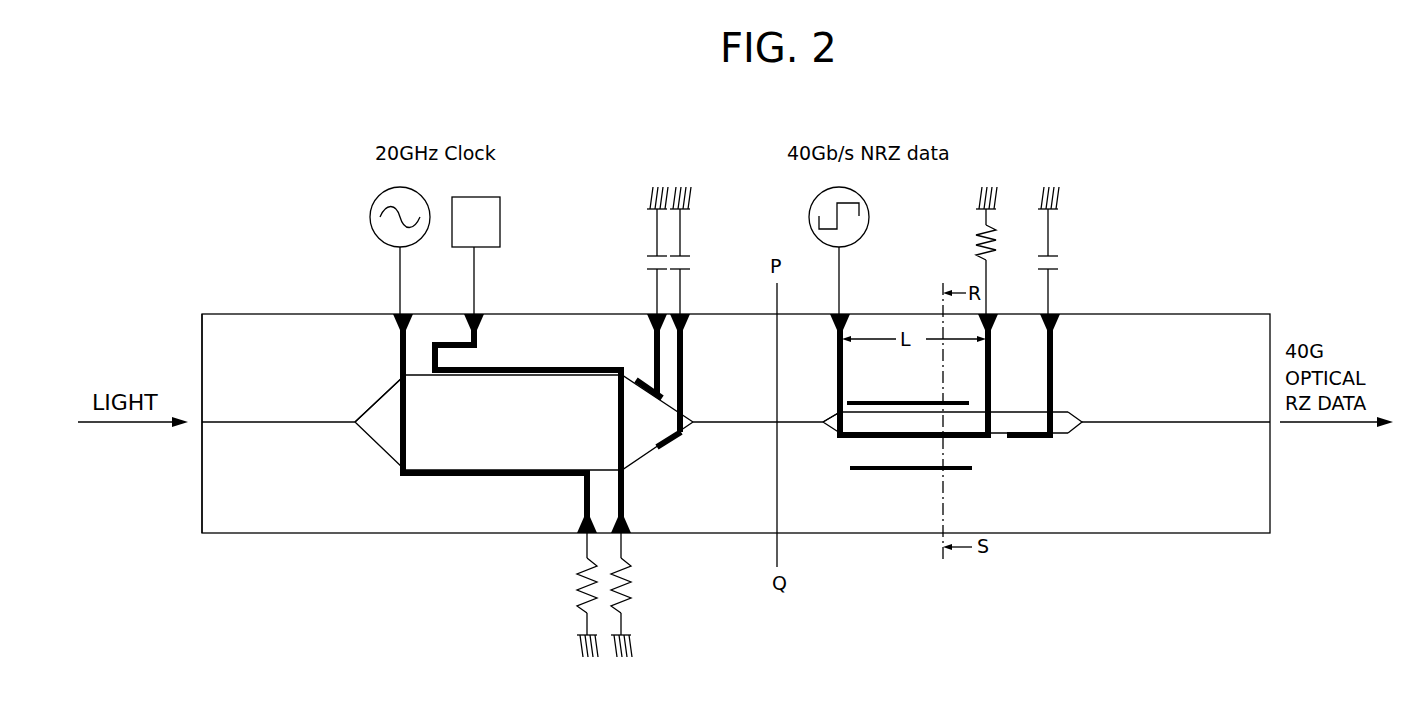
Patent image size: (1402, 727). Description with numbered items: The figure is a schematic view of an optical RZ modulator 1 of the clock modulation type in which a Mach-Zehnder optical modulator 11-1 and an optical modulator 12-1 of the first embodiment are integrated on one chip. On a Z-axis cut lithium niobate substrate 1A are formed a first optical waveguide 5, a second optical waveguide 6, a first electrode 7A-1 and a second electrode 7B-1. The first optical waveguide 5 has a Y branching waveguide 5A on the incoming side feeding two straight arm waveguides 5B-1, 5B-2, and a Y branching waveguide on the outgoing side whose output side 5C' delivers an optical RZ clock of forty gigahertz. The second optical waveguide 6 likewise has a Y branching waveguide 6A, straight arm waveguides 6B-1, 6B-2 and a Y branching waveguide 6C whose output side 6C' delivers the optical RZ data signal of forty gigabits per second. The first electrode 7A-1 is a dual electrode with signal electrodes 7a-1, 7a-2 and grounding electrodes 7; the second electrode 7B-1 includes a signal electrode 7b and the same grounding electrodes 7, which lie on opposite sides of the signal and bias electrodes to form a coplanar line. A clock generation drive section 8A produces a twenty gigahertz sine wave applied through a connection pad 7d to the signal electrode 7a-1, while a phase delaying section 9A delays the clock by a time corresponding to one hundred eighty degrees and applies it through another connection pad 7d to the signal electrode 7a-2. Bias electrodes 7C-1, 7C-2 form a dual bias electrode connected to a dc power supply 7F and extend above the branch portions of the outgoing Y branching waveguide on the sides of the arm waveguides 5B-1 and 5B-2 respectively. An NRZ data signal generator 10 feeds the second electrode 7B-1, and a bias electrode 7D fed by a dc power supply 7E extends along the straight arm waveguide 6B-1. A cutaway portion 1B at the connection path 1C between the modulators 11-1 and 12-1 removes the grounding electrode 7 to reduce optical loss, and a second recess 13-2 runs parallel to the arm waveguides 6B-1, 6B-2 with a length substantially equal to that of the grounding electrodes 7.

The optical RZ modulator 1 is at (250, 268).
The substrate 1A is at (193, 518).
The cutaway portion 1B is at (752, 450).
The connection path 1C is at (751, 420).
The first optical waveguide 5 is at (354, 434).
The Y branching waveguide 5A is at (371, 407).
The straight arm waveguide 5B-1 is at (606, 470).
The straight arm waveguide 5B-2 is at (412, 374).
The output side of Y branching waveguide 5C' is at (753, 529).
The second optical waveguide 6 is at (822, 438).
The Y branching waveguide 6A is at (823, 412).
The straight arm waveguide 6B-1 is at (1006, 437).
The straight arm waveguide 6B-2 is at (876, 410).
The Y branching waveguide 6C is at (1087, 404).
The output side of Y branching waveguide 6C' is at (1176, 446).
The grounding electrode 7 is at (575, 322).
The first electrode 7A-1 is at (449, 481).
The signal electrode 7a-1 is at (508, 477).
The signal electrode 7a-2 is at (540, 368).
The signal electrode 7b is at (914, 441).
The second electrode 7B-1 is at (880, 446).
The bias electrode 7C-1 is at (682, 353).
The bias electrode 7C-2 is at (655, 353).
The connection pad 7d is at (396, 314).
The bias electrode 7D is at (1053, 371).
The dc power supply 7E is at (1061, 270).
The dc power supply 7F is at (691, 270).
The clock generation drive section 8A is at (372, 233).
The phase delaying section 9A is at (503, 230).
The NRZ data signal generator 10 is at (868, 216).
The Mach-Zehnder optical modulator 11-1 is at (408, 563).
The optical modulator 12-1 is at (1004, 578).
The second recess 13-2 is at (927, 400).